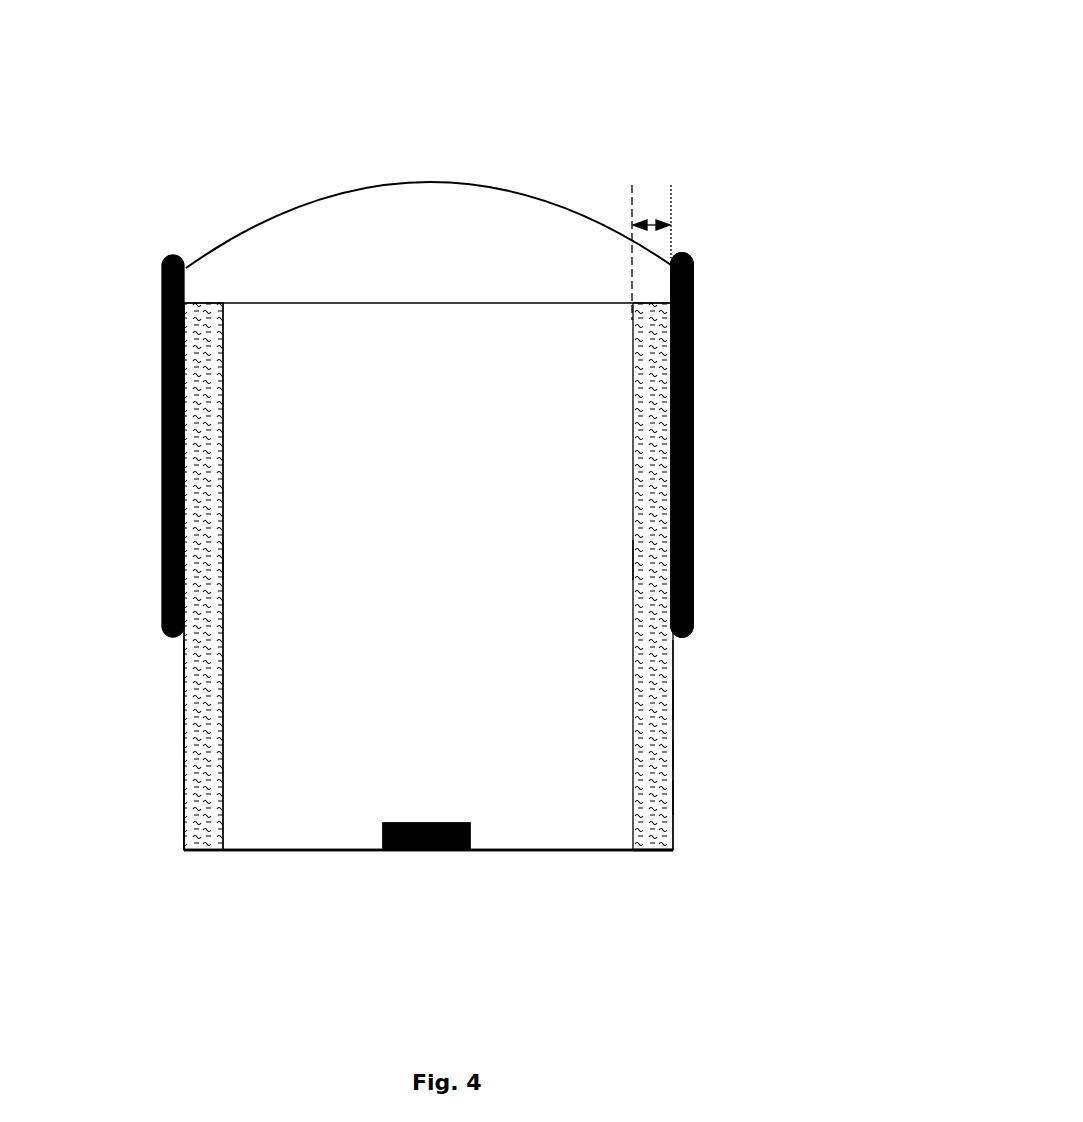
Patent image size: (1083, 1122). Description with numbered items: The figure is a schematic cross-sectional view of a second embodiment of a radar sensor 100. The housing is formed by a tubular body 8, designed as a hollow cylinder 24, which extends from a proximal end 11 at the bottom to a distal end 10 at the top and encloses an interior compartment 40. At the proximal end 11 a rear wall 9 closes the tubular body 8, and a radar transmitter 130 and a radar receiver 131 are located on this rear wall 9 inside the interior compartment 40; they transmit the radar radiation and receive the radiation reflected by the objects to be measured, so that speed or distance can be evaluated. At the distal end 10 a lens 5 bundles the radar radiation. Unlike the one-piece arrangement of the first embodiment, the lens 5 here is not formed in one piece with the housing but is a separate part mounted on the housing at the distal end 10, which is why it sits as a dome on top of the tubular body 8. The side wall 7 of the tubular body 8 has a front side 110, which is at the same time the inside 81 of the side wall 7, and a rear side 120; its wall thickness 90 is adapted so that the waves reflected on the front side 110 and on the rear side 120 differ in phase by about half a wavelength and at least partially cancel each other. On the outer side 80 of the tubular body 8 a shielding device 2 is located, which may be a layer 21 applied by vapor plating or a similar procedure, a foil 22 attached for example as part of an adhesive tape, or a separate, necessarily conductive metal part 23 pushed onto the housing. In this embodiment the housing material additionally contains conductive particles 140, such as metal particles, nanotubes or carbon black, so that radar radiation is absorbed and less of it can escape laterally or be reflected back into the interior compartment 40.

The radar sensor 100 is at (740, 100).
The distal end 10 is at (711, 232).
The lens 5 is at (350, 225).
The wall thickness 90 is at (657, 222).
The shielding device 2 is at (160, 405).
The layer 21 is at (694, 405).
The foil 22 is at (694, 405).
The conductive part 23 is at (694, 405).
The rear side 120 is at (186, 388).
The front side 110 is at (225, 455).
The inside 81 is at (235, 552).
The tubular body 8 is at (182, 700).
The hollow cylinder 24 is at (182, 700).
The outer side 80 is at (169, 718).
The side wall 7 is at (183, 775).
The conductive particles 140 is at (182, 817).
The interior compartment 40 is at (596, 816).
The rear wall 9 is at (311, 861).
The radar transmitter 130 is at (470, 850).
The radar receiver 131 is at (512, 908).
The proximal end 11 is at (705, 866).